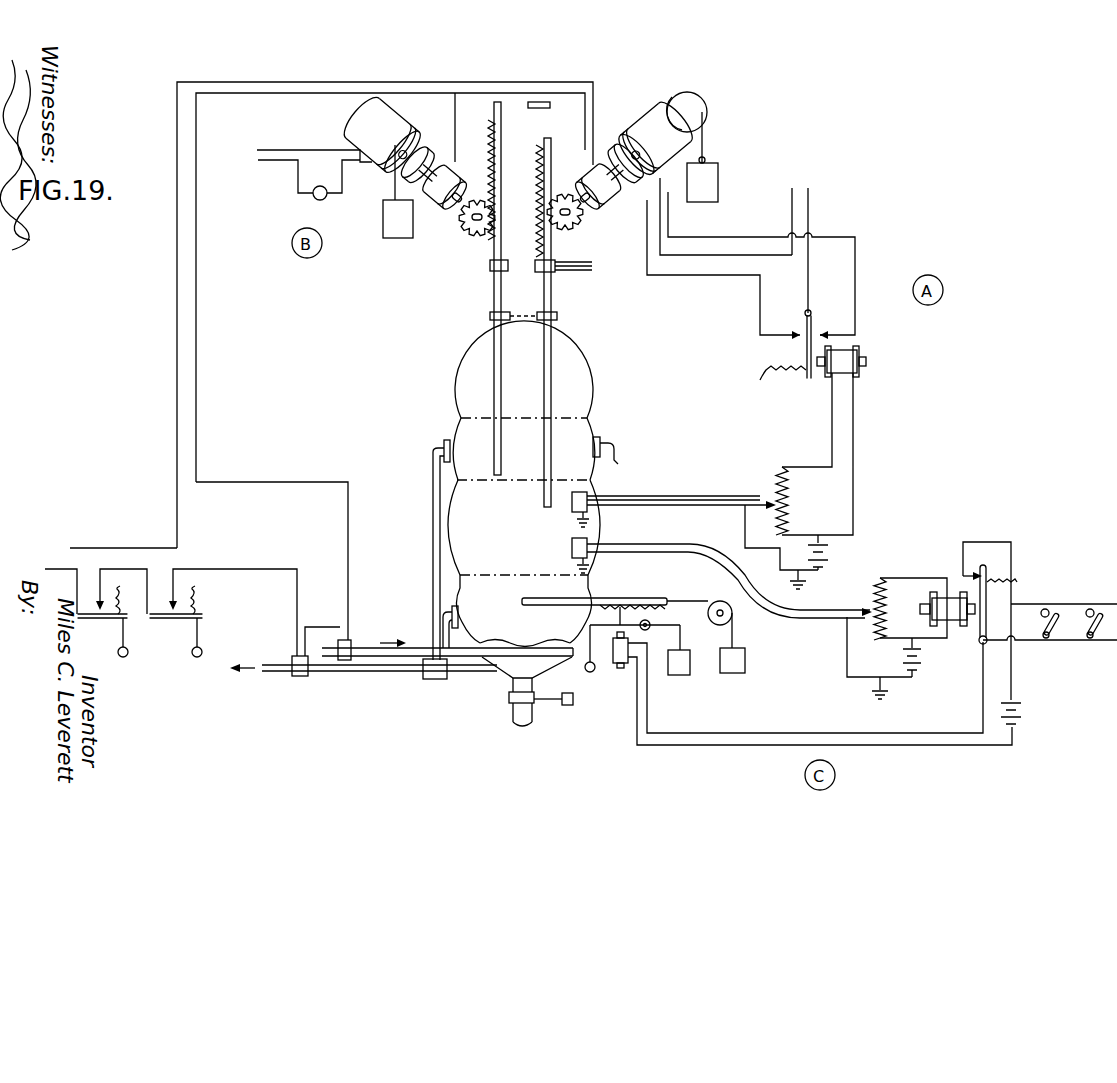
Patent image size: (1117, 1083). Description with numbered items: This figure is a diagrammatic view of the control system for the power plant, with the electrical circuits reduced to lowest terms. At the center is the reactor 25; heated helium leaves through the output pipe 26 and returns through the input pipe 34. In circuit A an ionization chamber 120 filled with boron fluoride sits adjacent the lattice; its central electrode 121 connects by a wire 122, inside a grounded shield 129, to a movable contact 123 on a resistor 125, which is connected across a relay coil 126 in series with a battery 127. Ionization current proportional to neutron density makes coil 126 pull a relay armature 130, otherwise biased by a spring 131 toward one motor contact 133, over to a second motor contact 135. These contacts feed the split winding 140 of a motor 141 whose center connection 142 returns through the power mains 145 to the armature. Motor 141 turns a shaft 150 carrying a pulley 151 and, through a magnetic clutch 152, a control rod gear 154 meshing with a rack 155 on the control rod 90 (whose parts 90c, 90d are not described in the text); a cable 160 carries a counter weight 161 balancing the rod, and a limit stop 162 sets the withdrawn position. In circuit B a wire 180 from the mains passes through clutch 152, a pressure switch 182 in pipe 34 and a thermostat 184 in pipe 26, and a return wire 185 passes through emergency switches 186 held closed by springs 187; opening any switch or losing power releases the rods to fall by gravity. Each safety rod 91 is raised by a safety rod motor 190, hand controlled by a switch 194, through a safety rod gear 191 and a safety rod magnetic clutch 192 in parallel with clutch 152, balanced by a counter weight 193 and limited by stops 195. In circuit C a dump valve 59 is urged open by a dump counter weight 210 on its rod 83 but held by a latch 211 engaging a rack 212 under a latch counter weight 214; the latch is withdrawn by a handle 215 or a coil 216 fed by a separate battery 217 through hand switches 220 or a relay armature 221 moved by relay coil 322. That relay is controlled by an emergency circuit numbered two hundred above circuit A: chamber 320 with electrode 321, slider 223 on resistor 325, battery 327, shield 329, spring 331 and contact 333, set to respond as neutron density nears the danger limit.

The reactor 25 is at (598, 438).
The helium output pipe 26 is at (398, 674).
The helium input pipe 34 is at (418, 634).
The dump valve 59 is at (556, 605).
The dump valve rod 83 is at (676, 588).
The control rod 90 is at (553, 302).
The arm 90c is at (590, 264).
The arm 90d is at (586, 274).
The safety rod 91 is at (490, 306).
The control ionization chamber 120 is at (586, 492).
The central electrode 121 is at (592, 502).
The wire 122 is at (616, 508).
The movable contact 123 is at (769, 502).
The resistor 125 is at (774, 472).
The relay coil 126 is at (840, 374).
The battery 127 is at (830, 552).
The shield 129 is at (680, 508).
The relay armature 130 is at (804, 352).
The spring 131 is at (760, 380).
The motor contact 133 is at (798, 332).
The second motor contact 135 is at (822, 334).
The split winding 140 is at (617, 183).
The motor 141 is at (645, 126).
The center connection 142 is at (648, 220).
The power mains 145 is at (810, 188).
The shaft 150 is at (622, 150).
The pulley 151 is at (702, 103).
The magnetic clutch 152 is at (610, 200).
The control rod gear 154 is at (580, 228).
The rack 155 is at (544, 148).
The cable 160 is at (706, 140).
The counter weight 161 is at (720, 185).
The limit stop 162 is at (545, 100).
The wire 180 is at (142, 540).
The pressure switch 182 is at (351, 642).
The thermostat 184 is at (300, 677).
The return wire 185 is at (243, 562).
The emergency switches 186 is at (104, 620).
The springs 187 is at (126, 588).
The safety rod motor 190 is at (392, 120).
The safety rod gear 191 is at (472, 230).
The safety rod magnetic clutch 192 is at (448, 205).
The balancing counter weight 193 is at (383, 222).
The switch 194 is at (314, 198).
The stops 195 is at (535, 268).
The dump counter weight 210 is at (745, 660).
The dump valve latch 211 is at (630, 616).
The rack 212 is at (636, 588).
The latch counter weight 214 is at (680, 676).
The handle 215 is at (588, 672).
The coil 216 is at (620, 668).
The battery 217 is at (1024, 714).
The hand switches 220 is at (1088, 638).
The relay armature 221 is at (991, 598).
The slider 223 is at (870, 610).
The emergency ionization chamber 320 is at (566, 540).
The central electrode 321 is at (572, 552).
The relay coil 322 is at (954, 620).
The resistor 325 is at (910, 572).
The battery 327 is at (918, 668).
The shield 329 is at (812, 618).
The spring 331 is at (1003, 577).
The contact 333 is at (979, 574).